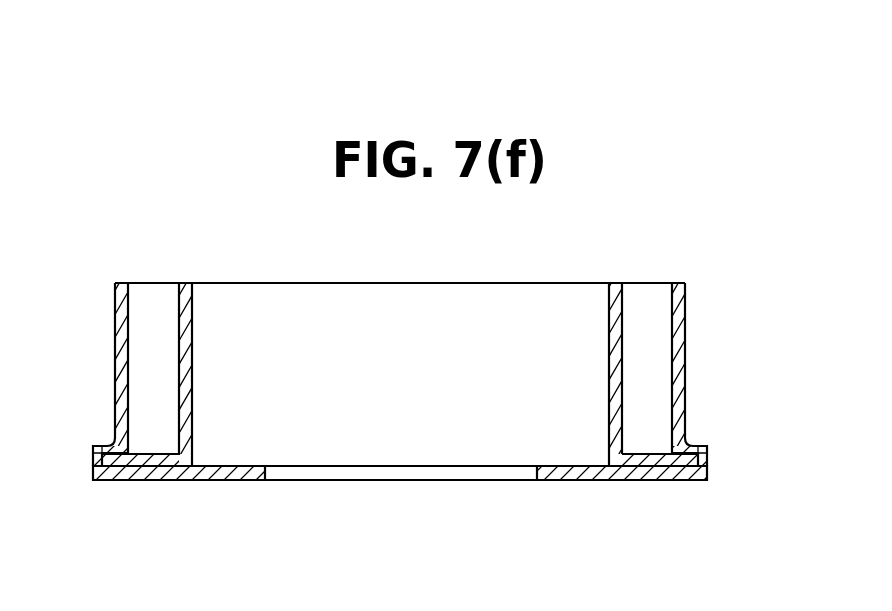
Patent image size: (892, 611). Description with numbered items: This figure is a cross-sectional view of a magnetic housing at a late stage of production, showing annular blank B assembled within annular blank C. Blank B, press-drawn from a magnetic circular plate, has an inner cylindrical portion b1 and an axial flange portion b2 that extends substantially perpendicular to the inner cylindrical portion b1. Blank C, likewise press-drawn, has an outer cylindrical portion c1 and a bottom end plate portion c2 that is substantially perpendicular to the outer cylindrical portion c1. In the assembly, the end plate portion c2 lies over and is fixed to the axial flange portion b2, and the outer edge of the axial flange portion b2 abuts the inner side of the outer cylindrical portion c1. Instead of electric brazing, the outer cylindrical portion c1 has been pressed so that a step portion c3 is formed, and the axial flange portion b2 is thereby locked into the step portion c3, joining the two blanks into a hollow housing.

The annular blank B is at (426, 376).
The annular blank C is at (426, 390).
The inner cylindrical portion b1 is at (610, 352).
The axial flange portion b2 is at (650, 454).
The outer cylindrical portion c1 is at (686, 362).
The end plate portion c2 is at (613, 481).
The step portion c3 is at (700, 461).